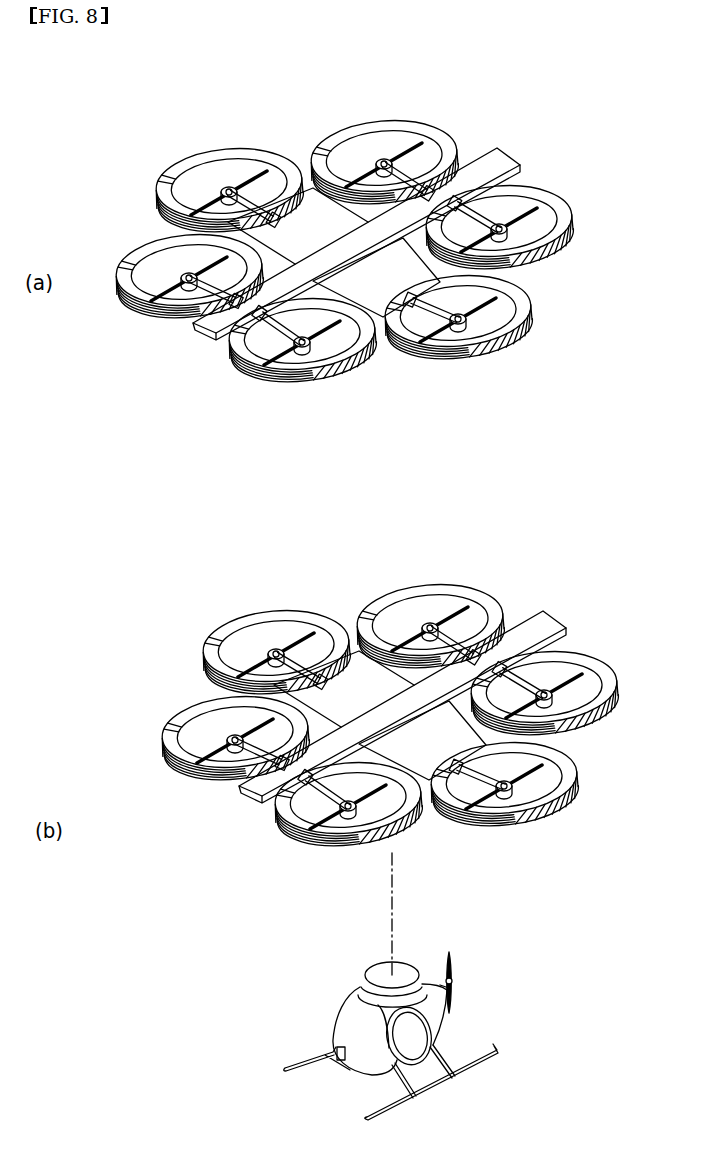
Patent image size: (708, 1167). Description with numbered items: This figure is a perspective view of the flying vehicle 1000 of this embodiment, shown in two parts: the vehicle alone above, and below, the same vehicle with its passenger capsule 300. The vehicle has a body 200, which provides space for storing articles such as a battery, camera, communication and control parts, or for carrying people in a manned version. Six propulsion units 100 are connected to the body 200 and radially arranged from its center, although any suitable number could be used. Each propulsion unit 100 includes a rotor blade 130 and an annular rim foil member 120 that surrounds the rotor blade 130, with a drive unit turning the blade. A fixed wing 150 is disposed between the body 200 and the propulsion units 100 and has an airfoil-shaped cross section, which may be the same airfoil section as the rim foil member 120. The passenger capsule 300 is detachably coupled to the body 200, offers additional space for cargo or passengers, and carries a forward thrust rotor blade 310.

The flying vehicle 1000 is at (188, 80).
The propulsion unit 100 is at (264, 128).
The annular rim foil member 120 is at (497, 356).
The rotor blade 130 is at (497, 330).
The fixed wing 150 is at (375, 293).
The body 200 is at (512, 143).
The passenger capsule 300 is at (330, 970).
The forward thrust rotor blade 310 is at (451, 966).